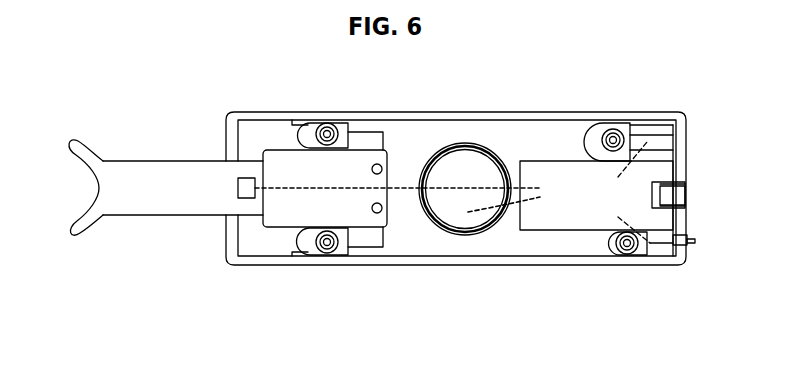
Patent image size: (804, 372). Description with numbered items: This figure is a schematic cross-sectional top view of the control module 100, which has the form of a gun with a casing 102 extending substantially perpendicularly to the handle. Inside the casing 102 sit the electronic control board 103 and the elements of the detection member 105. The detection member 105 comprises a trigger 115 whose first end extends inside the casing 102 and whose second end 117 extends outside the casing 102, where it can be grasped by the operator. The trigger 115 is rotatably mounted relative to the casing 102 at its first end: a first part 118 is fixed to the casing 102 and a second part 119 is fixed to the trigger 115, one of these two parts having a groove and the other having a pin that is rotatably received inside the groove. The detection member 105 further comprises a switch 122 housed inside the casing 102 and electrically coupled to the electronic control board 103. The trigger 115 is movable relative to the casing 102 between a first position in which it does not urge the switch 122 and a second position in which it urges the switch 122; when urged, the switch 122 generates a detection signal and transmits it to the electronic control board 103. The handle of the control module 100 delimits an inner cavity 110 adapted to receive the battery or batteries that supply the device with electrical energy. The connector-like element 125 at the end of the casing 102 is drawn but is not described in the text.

The control module 100 is at (359, 307).
The casing 102 is at (570, 113).
The electronic control board 103 is at (582, 202).
The detection member 105 is at (166, 186).
The inner cavity 110 is at (481, 166).
The trigger 115 is at (177, 190).
The second end 117 is at (90, 222).
The first part 118 is at (363, 137).
The second part 119 is at (293, 165).
The switch 122 is at (243, 180).
The connector 125 is at (676, 193).